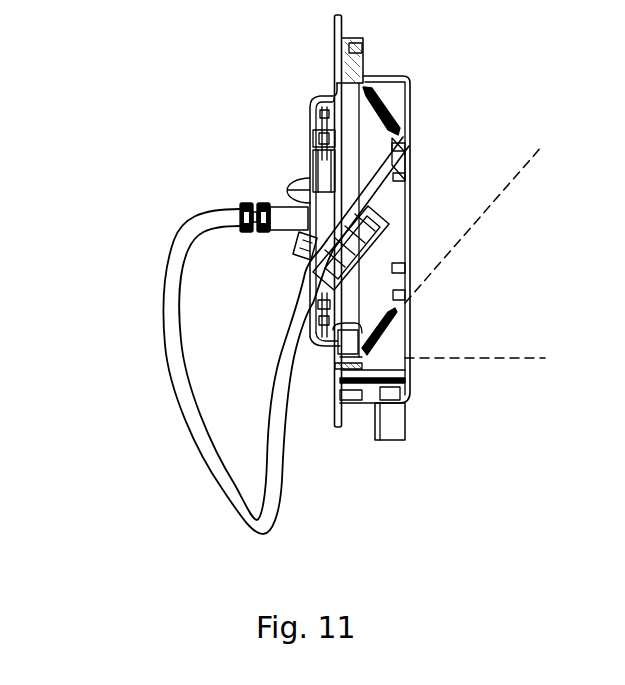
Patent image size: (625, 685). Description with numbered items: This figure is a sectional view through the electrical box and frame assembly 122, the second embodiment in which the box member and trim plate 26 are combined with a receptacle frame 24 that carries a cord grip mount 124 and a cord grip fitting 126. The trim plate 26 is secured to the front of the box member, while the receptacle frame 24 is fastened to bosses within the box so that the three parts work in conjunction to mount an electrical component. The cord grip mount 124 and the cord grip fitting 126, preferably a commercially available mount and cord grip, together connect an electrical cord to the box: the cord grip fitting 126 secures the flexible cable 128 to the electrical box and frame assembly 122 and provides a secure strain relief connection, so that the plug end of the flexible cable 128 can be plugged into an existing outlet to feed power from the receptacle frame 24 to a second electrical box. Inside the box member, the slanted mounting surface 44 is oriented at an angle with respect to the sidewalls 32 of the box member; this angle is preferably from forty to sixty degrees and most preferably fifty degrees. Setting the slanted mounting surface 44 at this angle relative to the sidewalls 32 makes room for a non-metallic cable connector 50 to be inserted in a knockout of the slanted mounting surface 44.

The electrical box and frame assembly 122 is at (132, 97).
The trim plate 26 is at (335, 32).
The sidewalls 32 is at (380, 73).
The receptacle frame 24 is at (410, 105).
The cord grip mount 124 is at (387, 252).
The cord grip fitting 126 is at (293, 250).
The cable connector 50 is at (323, 337).
The flexible cable 128 is at (183, 391).
The slanted mounting surface 44 is at (398, 333).